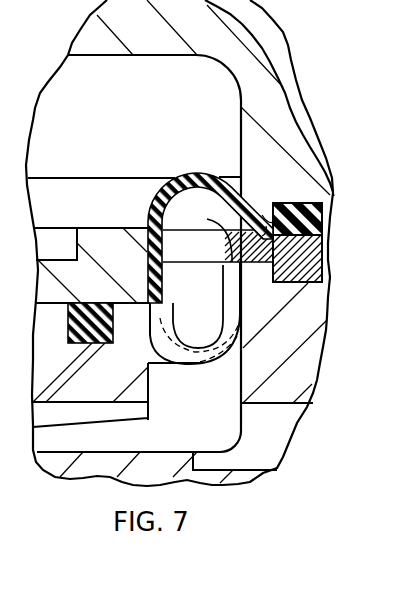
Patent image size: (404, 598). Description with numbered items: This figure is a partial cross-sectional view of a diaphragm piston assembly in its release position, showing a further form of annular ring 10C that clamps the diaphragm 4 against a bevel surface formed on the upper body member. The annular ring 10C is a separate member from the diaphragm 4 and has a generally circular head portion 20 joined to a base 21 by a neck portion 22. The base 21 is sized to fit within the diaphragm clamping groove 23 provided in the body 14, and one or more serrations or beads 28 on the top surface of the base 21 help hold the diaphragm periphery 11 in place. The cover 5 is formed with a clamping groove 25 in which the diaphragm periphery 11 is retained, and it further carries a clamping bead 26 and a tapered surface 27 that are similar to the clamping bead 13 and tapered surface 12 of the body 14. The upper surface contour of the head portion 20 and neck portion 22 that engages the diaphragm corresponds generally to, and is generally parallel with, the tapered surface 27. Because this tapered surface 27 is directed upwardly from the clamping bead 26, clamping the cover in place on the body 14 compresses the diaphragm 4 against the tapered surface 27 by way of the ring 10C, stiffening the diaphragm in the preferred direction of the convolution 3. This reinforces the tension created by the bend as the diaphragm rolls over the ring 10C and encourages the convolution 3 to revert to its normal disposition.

The convolution 3 is at (217, 178).
The diaphragm 4 is at (147, 222).
The cover 5 is at (257, 75).
The annular ring 10C is at (222, 232).
The diaphragm periphery 11 is at (318, 222).
The tapered surface 12 is at (247, 260).
The clamping bead 13 is at (268, 256).
The body 14 is at (293, 361).
The head portion 20 is at (222, 240).
The base 21 is at (317, 260).
The neck portion 22 is at (230, 259).
The diaphragm clamping groove 23 is at (320, 278).
The clamping groove 25 is at (327, 190).
The clamping bead 26 is at (270, 210).
The tapered surface 27 is at (266, 226).
The serrations or beads 28 is at (322, 237).